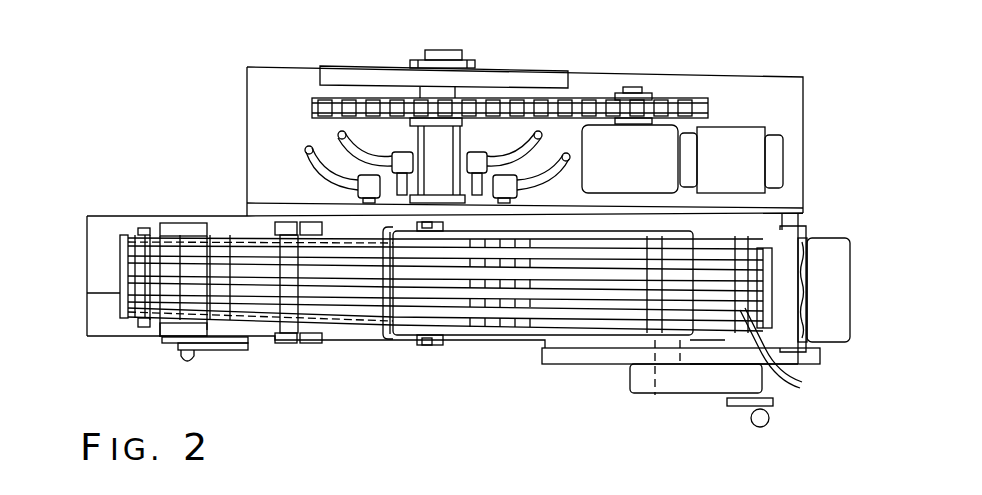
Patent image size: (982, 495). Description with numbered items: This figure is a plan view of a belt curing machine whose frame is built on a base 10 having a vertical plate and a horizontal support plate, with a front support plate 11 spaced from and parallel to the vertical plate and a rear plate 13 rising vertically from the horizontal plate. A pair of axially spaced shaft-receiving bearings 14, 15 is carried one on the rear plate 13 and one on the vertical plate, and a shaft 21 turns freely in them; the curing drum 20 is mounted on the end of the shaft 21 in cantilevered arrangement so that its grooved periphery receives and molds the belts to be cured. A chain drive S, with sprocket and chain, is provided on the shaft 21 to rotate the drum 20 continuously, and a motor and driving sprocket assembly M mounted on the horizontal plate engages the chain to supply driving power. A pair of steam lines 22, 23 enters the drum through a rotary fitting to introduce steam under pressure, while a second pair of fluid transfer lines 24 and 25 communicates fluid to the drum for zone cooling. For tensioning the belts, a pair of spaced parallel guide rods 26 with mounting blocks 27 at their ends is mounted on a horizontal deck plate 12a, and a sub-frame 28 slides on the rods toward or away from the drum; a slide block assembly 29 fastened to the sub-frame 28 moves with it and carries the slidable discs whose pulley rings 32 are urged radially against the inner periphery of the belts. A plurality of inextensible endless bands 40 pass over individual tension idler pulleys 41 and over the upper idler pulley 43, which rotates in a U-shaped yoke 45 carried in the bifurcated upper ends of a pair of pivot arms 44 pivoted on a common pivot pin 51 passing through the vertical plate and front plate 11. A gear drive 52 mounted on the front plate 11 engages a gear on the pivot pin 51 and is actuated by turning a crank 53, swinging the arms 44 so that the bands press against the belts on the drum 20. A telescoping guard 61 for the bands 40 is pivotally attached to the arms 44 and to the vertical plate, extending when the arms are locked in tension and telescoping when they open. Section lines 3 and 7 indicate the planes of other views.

The section line 3- 3 is at (325, 300).
The section line 7- 7 is at (277, 162).
The base 10 is at (446, 420).
The front support plate 11 is at (587, 357).
The horizontal deck plate 12a is at (268, 340).
The rear plate 13 is at (350, 76).
The shaft-receiving bearing 14 is at (442, 198).
The shaft-receiving bearing 15 is at (447, 52).
The curing drum 20 is at (527, 330).
The shaft 21 is at (448, 50).
The steam line 22 is at (535, 135).
The steam line 23 is at (566, 160).
The fluid transfer line 24 is at (353, 150).
The fluid transfer line 25 is at (312, 152).
The guide rods 26 is at (157, 228).
The mounting blocks 27 is at (135, 325).
The sub-frame 28 is at (163, 222).
The slide block assembly 29 is at (180, 222).
The pulley ring 32 is at (125, 293).
The endless bands 40 is at (767, 278).
The tension idler pulleys 41 is at (792, 359).
The upper idler pulley 43 is at (453, 323).
The pivot arms 44 is at (436, 344).
The yoke 45 is at (378, 335).
The pivot pin 51 is at (662, 365).
The gear drive 52 is at (697, 390).
The crank 53 is at (757, 422).
The telescoping guard 61 is at (840, 260).
The motor and driving sprocket assembly M is at (753, 118).
The chain drive S is at (523, 99).